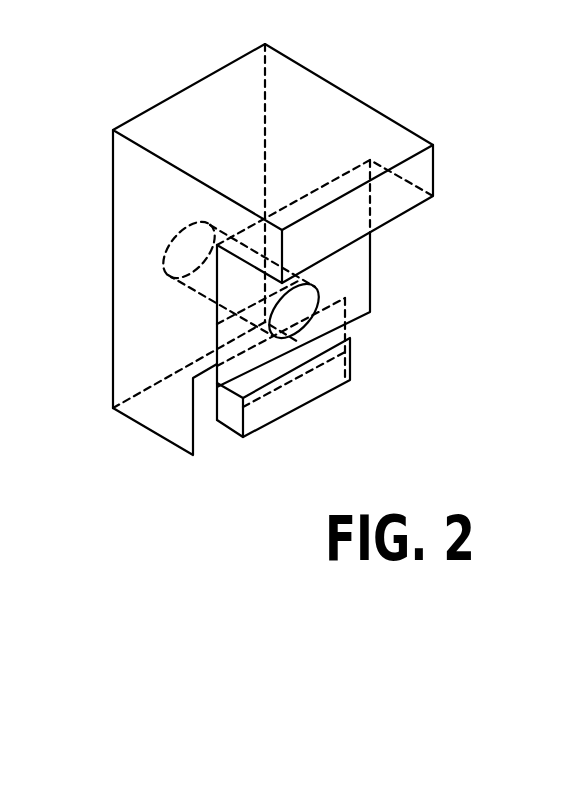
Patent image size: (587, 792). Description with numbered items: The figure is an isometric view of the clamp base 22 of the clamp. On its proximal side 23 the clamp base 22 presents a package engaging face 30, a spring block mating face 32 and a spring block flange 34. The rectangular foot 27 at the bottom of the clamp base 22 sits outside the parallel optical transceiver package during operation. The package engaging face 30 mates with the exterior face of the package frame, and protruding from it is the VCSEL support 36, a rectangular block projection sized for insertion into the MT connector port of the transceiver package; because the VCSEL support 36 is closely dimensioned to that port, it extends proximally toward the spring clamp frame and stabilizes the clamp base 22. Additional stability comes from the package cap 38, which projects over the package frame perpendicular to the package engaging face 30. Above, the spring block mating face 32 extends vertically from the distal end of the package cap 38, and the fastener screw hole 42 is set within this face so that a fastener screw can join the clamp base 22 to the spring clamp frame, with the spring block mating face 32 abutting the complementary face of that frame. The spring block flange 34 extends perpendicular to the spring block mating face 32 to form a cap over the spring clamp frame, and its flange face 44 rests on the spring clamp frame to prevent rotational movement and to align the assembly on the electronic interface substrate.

The clamp base 22 is at (338, 50).
The proximal side 23 is at (420, 282).
The rectangular foot 27 is at (143, 410).
The package engaging face 30 is at (207, 430).
The spring block mating face 32 is at (352, 280).
The spring block flange 34 is at (407, 198).
The VCSEL support 36 is at (310, 382).
The package cap 38 is at (355, 316).
The fastener screw hole 42 is at (183, 248).
The flange face 44 is at (348, 212).